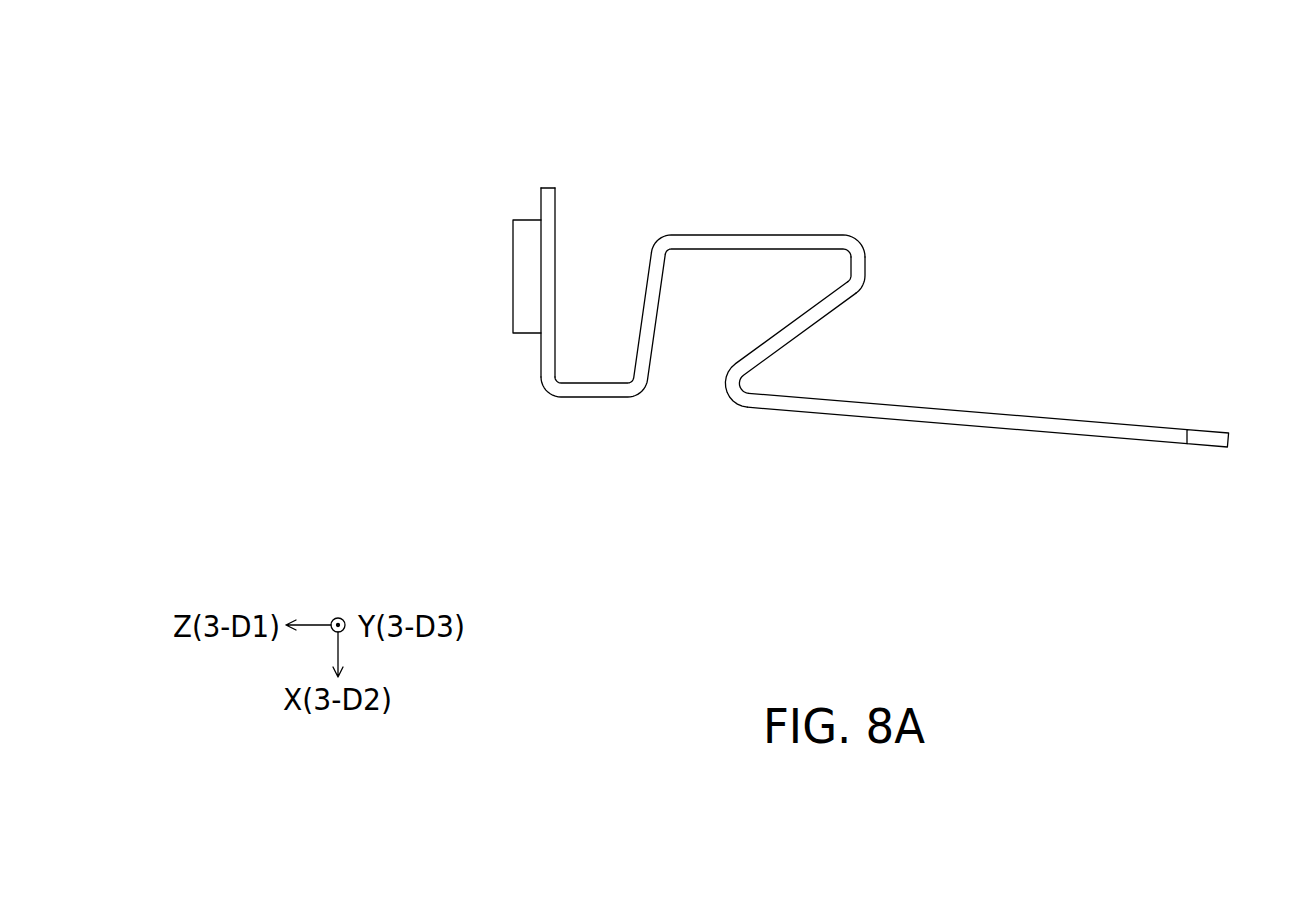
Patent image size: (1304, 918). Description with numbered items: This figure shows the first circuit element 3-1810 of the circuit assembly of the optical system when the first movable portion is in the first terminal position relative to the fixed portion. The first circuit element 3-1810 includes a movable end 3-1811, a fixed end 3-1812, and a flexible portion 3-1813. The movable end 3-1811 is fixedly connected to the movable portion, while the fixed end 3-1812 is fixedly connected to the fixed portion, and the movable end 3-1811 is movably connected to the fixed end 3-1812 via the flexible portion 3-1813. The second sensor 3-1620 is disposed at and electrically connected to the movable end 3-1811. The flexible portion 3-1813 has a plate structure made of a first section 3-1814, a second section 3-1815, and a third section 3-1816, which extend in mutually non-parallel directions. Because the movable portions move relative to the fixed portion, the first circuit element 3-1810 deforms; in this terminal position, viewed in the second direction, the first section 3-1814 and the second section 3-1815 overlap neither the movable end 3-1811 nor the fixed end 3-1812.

The first circuit element 3-1810 is at (1265, 82).
The movable end 3-1811 is at (547, 205).
The fixed end 3-1812 is at (1208, 447).
The flexible portion 3-1813 is at (877, 250).
The first section 3-1814 is at (797, 323).
The second section 3-1815 is at (752, 242).
The third section 3-1816 is at (650, 328).
The second sensor 3-1620 is at (523, 278).